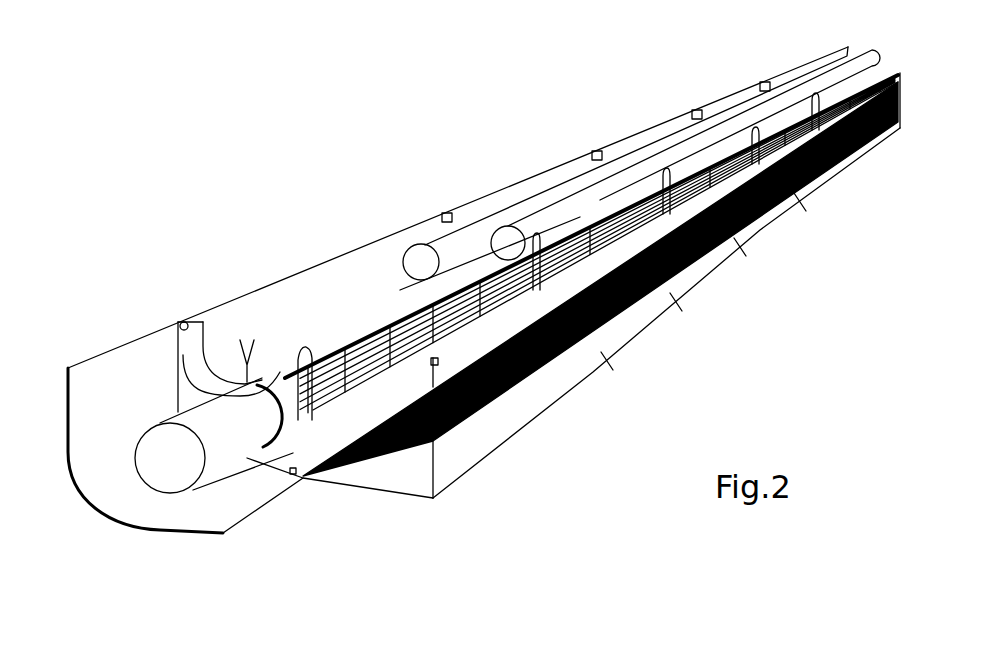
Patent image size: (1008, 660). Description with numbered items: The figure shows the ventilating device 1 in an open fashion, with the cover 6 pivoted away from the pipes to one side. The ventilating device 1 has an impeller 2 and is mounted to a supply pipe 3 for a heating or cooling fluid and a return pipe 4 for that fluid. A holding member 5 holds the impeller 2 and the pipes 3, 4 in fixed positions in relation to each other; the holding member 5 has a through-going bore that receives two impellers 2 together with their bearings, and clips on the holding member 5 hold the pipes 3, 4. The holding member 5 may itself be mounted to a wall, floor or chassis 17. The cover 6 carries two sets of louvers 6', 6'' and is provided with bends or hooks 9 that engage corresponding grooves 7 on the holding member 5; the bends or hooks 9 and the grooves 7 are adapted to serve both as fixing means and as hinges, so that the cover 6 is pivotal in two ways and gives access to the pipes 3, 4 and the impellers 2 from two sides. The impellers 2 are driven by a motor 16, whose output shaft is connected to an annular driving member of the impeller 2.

The ventilating device 1 is at (318, 250).
The impeller 2 is at (570, 390).
The supply pipe 3 is at (424, 258).
The return pipe 4 is at (510, 243).
The holding member 5 is at (196, 385).
The cover 6 is at (600, 290).
The first set of louvers 6' is at (368, 502).
The second set of louvers 6'' is at (666, 313).
The grooves 7 is at (180, 324).
The bends or hooks 9 is at (300, 468).
The motor 16 is at (206, 413).
The wall, floor or chassis 17 is at (276, 500).